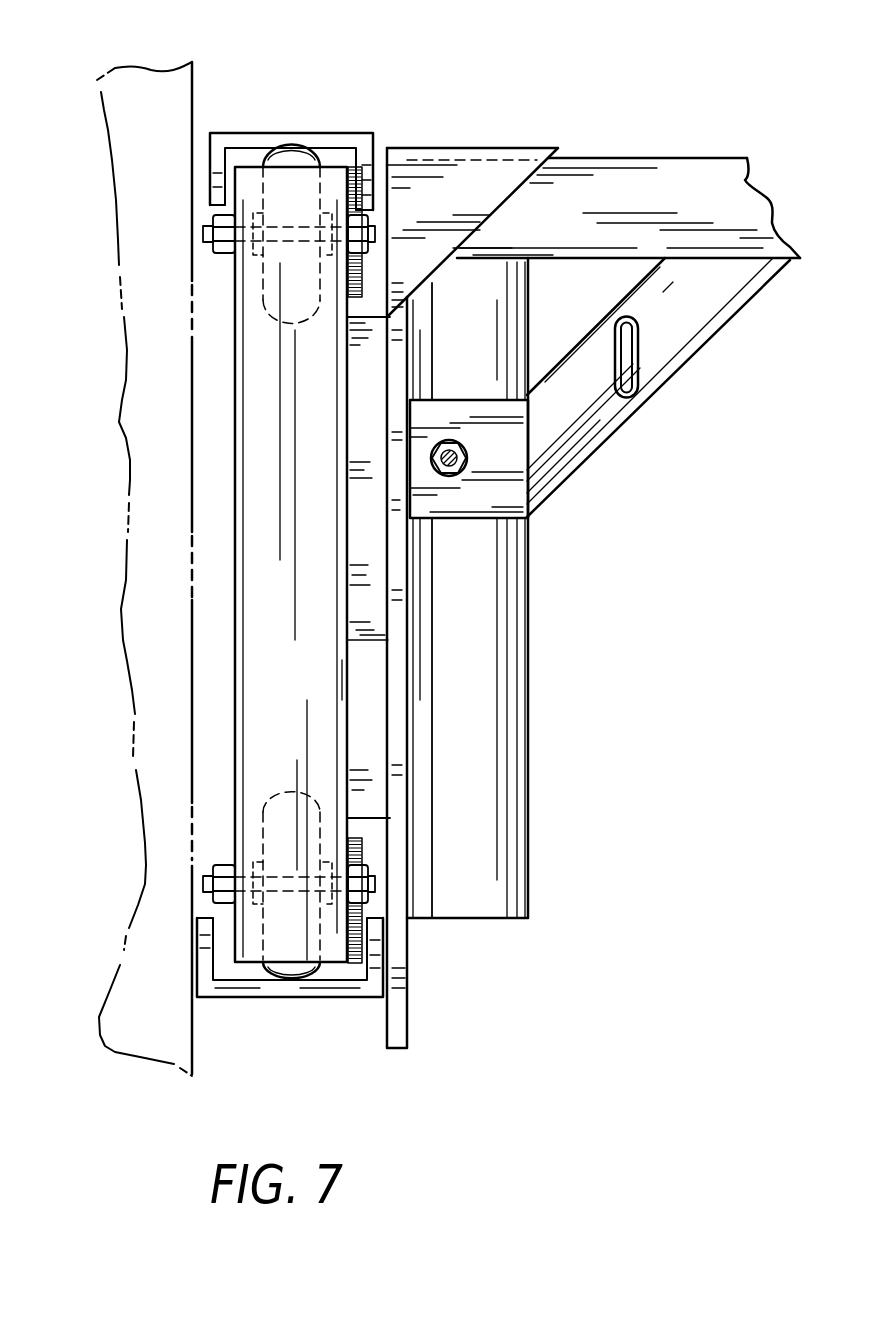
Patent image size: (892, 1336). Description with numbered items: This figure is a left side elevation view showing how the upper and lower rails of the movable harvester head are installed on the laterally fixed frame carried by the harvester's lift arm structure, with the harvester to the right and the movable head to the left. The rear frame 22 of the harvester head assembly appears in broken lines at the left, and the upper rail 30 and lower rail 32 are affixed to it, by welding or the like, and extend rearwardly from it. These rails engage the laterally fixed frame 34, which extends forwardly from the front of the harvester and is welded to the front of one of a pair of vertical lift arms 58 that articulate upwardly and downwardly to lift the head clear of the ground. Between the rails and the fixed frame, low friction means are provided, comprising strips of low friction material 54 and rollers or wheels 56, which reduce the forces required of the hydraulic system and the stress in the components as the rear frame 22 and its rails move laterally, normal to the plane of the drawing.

The rear frame 22 is at (119, 425).
The upper rail 30 is at (233, 133).
The lower rail 32 is at (205, 998).
The frame 34 is at (313, 688).
The low friction material 54 is at (353, 148).
The rollers or wheels 56 is at (287, 153).
The vertical lift arms 58 is at (483, 650).